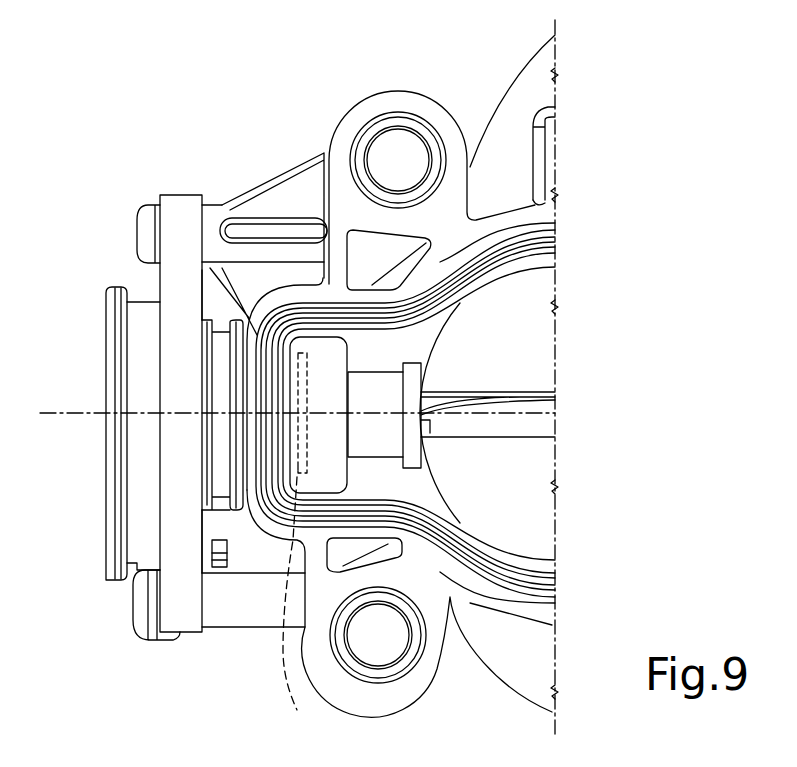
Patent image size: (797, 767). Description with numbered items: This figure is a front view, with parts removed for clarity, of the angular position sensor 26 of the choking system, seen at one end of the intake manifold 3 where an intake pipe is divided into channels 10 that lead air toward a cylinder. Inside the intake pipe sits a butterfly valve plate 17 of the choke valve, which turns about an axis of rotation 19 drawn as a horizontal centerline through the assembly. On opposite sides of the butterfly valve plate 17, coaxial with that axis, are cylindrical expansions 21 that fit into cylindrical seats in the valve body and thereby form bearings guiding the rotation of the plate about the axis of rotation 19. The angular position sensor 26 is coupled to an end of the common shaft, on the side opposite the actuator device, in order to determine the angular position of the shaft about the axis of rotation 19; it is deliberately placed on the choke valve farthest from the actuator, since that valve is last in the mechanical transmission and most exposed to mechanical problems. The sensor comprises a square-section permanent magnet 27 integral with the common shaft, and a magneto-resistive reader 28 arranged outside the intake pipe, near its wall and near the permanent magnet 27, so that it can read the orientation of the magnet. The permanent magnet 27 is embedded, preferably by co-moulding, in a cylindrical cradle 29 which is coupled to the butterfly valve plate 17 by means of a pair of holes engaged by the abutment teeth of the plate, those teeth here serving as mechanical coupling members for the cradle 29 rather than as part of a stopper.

The intake manifold 3 is at (600, 230).
The channel 10 is at (513, 343).
The butterfly valve plate 17 is at (527, 427).
The axis of rotation 19 is at (62, 414).
The cylindrical expansion 21 is at (383, 445).
The angular position sensor 26 is at (124, 646).
The permanent magnet 27 is at (259, 608).
The reader 28 is at (137, 378).
The cylindrical cradle 29 is at (323, 353).